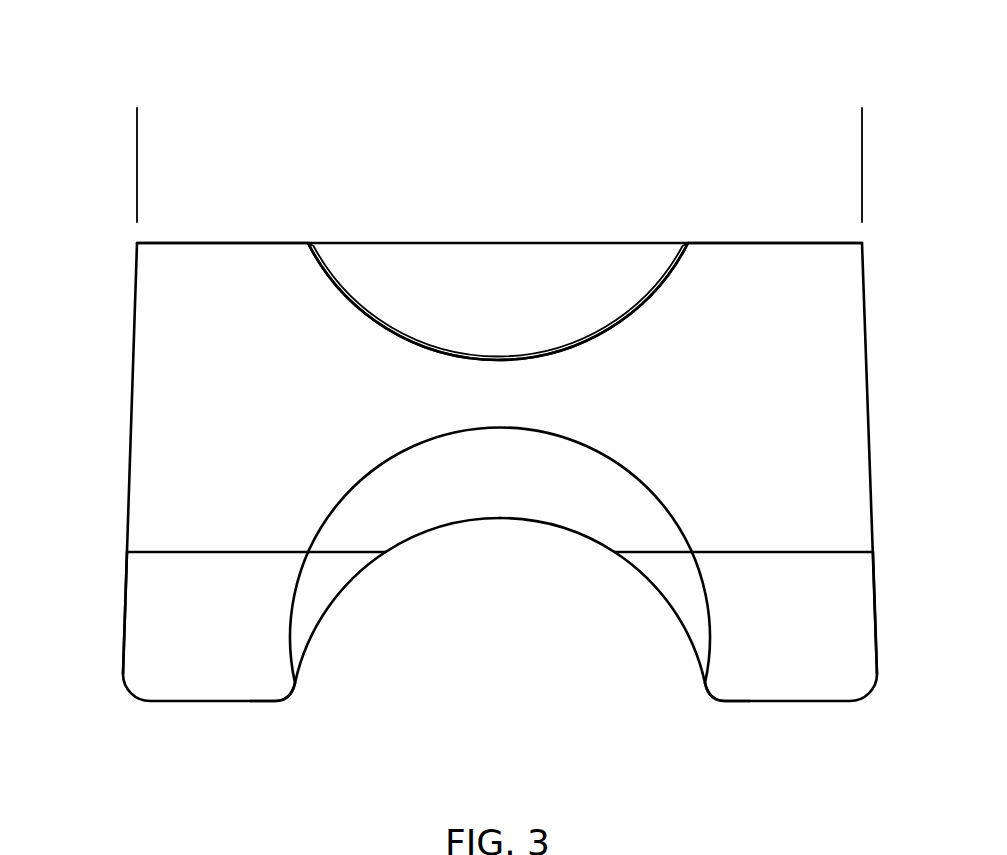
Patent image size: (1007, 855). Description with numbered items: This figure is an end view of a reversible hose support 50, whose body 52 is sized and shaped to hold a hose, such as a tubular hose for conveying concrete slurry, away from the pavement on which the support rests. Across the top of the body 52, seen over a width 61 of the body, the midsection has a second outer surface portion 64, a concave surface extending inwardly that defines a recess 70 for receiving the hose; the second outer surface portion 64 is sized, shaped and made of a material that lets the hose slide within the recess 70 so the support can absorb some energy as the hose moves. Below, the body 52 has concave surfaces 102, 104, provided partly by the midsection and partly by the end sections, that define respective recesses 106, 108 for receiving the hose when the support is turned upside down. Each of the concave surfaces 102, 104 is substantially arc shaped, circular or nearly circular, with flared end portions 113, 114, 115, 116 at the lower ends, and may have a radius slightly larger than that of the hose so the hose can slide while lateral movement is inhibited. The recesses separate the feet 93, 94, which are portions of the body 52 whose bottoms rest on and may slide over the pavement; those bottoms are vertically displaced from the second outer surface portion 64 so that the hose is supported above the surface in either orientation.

The hose support 50 is at (779, 68).
The body 52 is at (871, 430).
The width 61 is at (862, 148).
The second outer surface portion 64 is at (366, 299).
The recess 70 is at (509, 274).
The foot 93 is at (123, 641).
The foot 94 is at (878, 640).
The concave surface 102 is at (675, 626).
The concave surface 104 is at (323, 626).
The recess 106 is at (522, 653).
The recess 108 is at (470, 653).
The flared end portion 113 is at (274, 734).
The flared end portion 115 is at (292, 698).
The flared end portion 114 is at (719, 734).
The flared end portion 116 is at (706, 698).